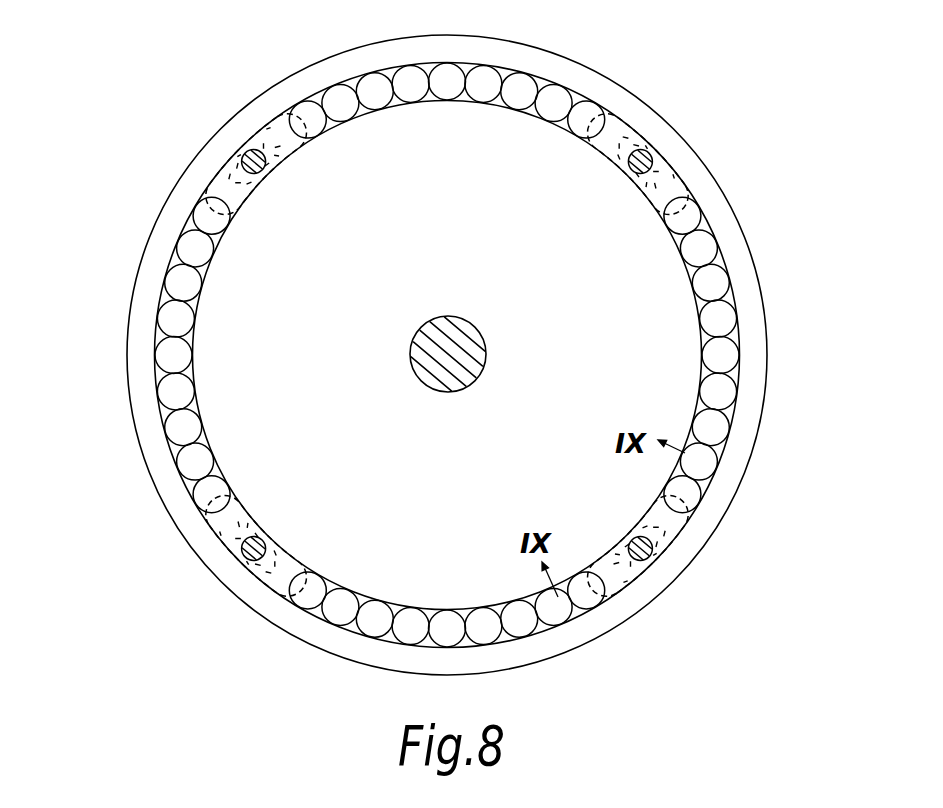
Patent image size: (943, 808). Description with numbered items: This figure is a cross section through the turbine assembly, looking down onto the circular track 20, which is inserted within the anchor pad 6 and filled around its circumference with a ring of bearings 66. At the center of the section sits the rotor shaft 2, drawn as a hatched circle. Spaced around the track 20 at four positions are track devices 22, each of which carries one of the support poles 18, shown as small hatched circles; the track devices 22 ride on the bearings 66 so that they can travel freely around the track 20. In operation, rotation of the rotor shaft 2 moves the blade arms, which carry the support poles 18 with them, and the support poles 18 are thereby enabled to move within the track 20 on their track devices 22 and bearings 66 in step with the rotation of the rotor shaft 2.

The rotor shaft 2 is at (467, 350).
The anchor pad 6 is at (232, 308).
The support pole 18 is at (245, 150).
The track 20 is at (157, 370).
The track device 22 is at (228, 193).
The bearings 66 is at (377, 83).